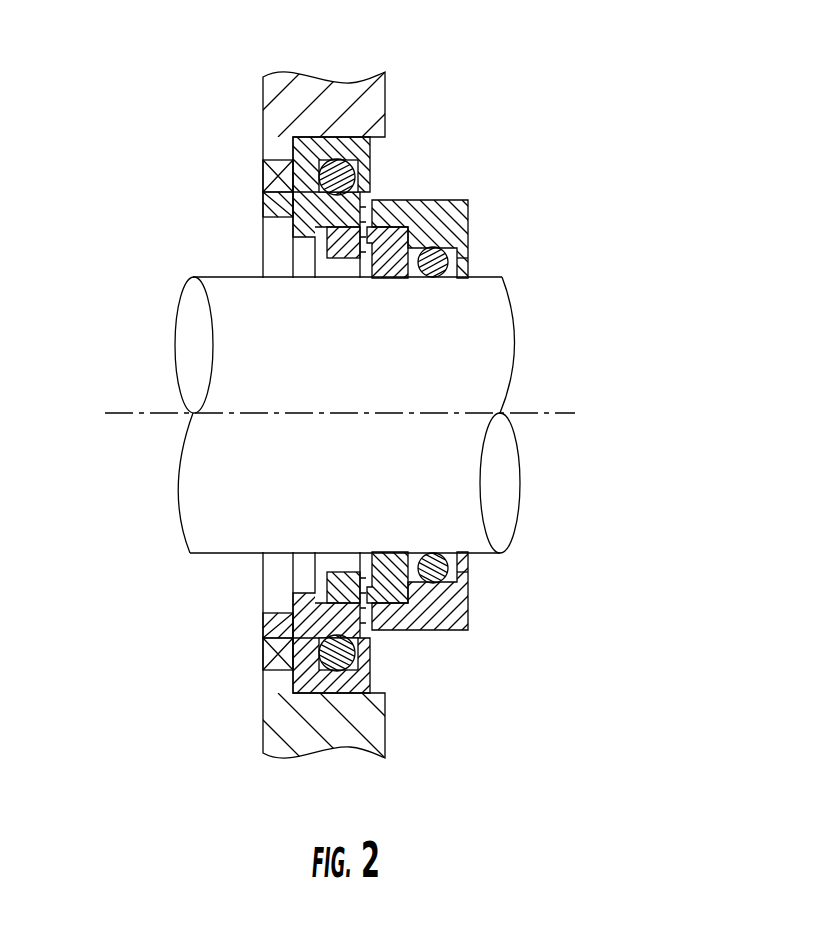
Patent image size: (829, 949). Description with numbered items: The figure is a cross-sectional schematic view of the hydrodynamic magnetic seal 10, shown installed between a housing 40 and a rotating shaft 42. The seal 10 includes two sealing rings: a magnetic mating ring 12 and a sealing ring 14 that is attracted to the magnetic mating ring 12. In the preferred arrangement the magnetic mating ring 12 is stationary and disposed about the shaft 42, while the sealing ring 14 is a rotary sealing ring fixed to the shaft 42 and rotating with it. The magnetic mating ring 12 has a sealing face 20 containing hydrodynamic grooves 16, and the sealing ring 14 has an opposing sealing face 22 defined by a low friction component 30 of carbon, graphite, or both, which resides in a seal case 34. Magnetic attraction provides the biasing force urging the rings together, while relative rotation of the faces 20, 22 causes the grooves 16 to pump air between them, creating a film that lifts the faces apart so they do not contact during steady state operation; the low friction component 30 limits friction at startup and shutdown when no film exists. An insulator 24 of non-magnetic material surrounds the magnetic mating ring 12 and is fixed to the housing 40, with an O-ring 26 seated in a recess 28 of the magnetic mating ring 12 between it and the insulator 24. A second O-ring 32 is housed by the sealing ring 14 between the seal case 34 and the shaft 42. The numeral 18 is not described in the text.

The hydrodynamic magnetic seal 10 is at (389, 148).
The magnetic mating ring 12 is at (263, 157).
The sealing ring 14 is at (470, 215).
The hydrodynamic grooves 16 is at (345, 258).
The seal 18 is at (393, 215).
The sealing face 20 is at (363, 583).
The sealing face 22 is at (363, 568).
The insulator 24 is at (305, 676).
The O-ring 26 is at (337, 160).
The recess 28 is at (293, 626).
The low friction component 30 is at (372, 222).
The O-ring 32 is at (446, 256).
The seal case 34 is at (455, 595).
The housing 40 is at (358, 732).
The shaft 42 is at (220, 288).